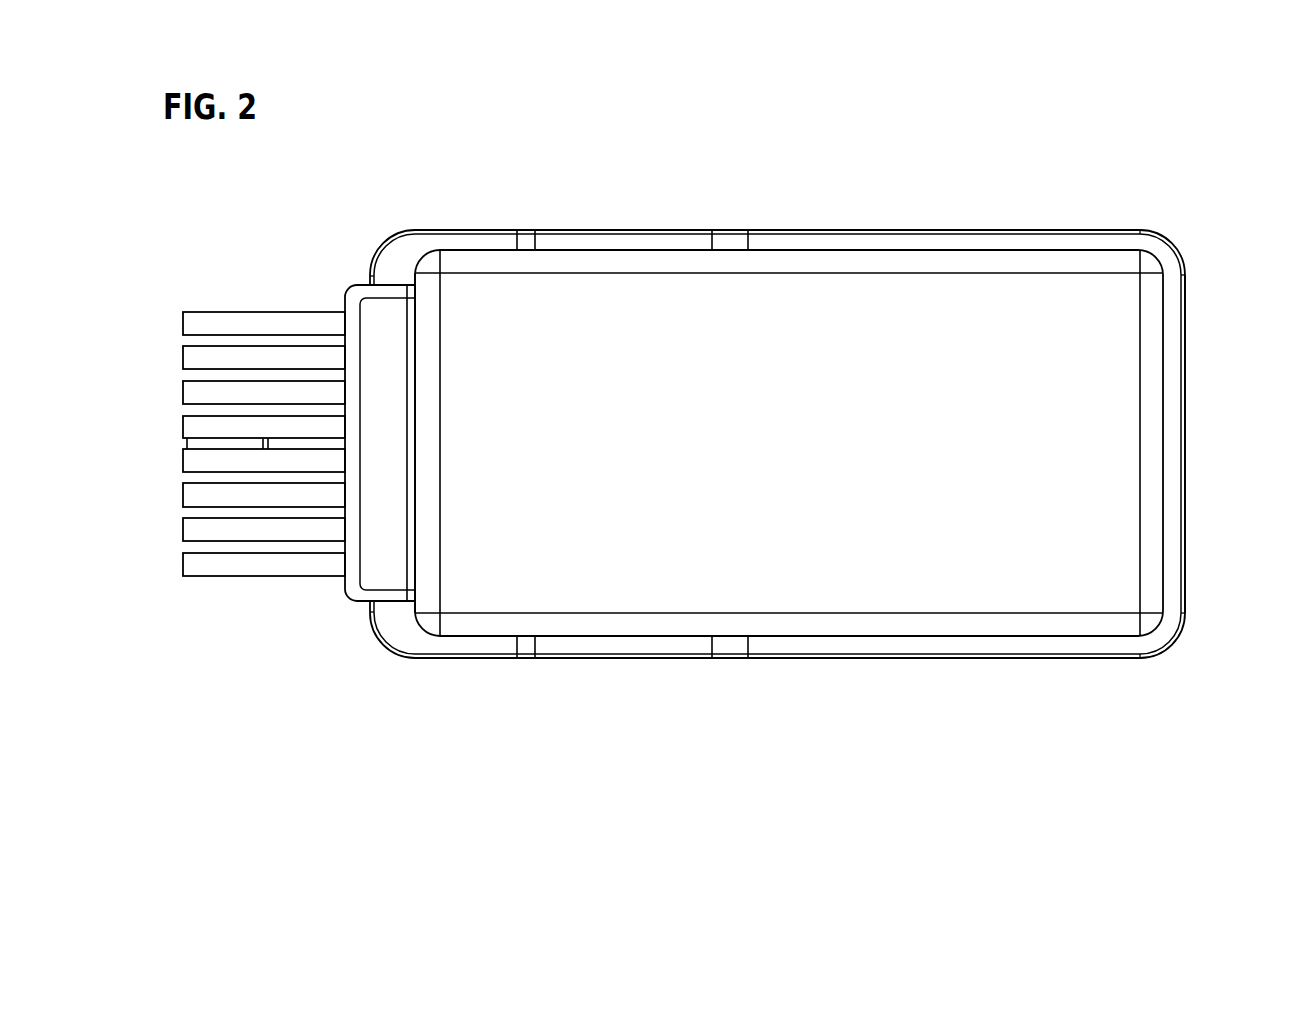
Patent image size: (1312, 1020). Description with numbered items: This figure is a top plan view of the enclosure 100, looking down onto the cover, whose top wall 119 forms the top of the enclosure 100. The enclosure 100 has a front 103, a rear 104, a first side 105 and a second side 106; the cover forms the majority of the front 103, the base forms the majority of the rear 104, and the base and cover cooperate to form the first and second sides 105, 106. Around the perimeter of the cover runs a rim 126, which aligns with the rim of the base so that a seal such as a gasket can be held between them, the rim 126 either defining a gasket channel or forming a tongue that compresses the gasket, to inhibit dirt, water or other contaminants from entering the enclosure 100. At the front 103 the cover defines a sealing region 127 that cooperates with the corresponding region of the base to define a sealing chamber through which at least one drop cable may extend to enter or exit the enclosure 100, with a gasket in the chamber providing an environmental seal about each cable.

The enclosure 100 is at (1013, 213).
The front 103 is at (259, 284).
The rear 104 is at (1217, 293).
The first side 105 is at (801, 698).
The second side 106 is at (611, 185).
The top wall 119 is at (806, 437).
The rim 126 is at (413, 638).
The sealing region 127 is at (382, 558).